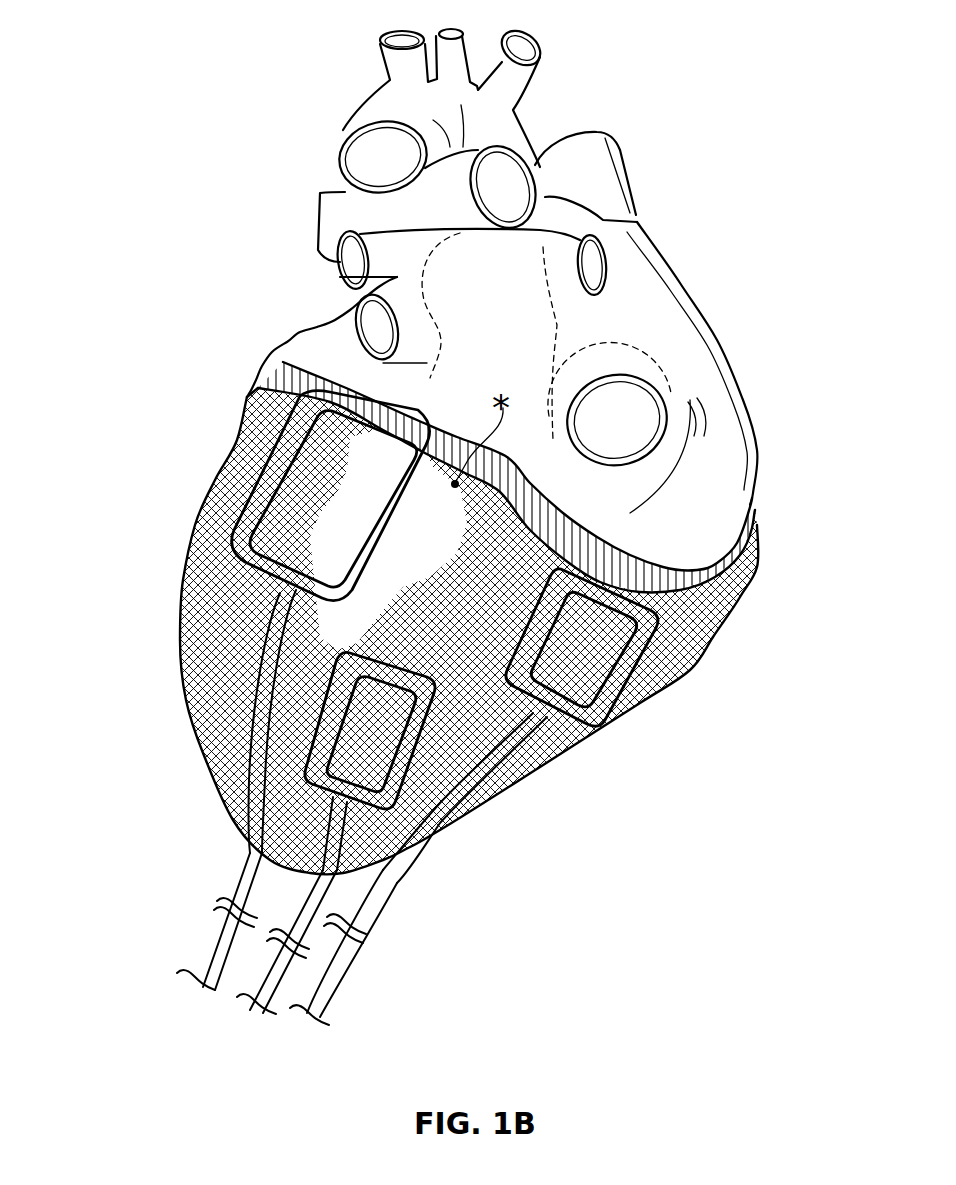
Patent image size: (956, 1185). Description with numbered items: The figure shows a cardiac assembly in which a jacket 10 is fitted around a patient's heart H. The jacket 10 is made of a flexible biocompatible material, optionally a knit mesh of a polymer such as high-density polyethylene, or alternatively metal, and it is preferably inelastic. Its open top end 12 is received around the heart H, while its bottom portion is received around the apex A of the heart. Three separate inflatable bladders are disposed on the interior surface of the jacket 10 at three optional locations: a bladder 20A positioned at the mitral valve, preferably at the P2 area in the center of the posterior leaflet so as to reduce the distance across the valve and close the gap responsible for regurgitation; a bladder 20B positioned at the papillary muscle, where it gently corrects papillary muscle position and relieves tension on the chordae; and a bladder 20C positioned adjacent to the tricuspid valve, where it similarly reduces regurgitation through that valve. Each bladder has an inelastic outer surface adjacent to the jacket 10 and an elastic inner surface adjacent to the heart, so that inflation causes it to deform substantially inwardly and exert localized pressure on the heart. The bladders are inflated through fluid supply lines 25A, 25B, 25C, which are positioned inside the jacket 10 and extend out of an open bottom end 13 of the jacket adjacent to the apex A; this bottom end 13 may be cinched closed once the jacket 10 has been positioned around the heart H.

The heart H is at (693, 335).
The jacket 10 is at (190, 683).
The open top end 12 is at (712, 543).
The apex A is at (203, 730).
The open bottom end 13 is at (226, 850).
The bladder 20A is at (287, 480).
The bladder 20B is at (453, 807).
The bladder 20C is at (583, 670).
The fluid supply line 25A is at (212, 950).
The fluid supply line 25B is at (280, 973).
The fluid supply line 25C is at (337, 957).